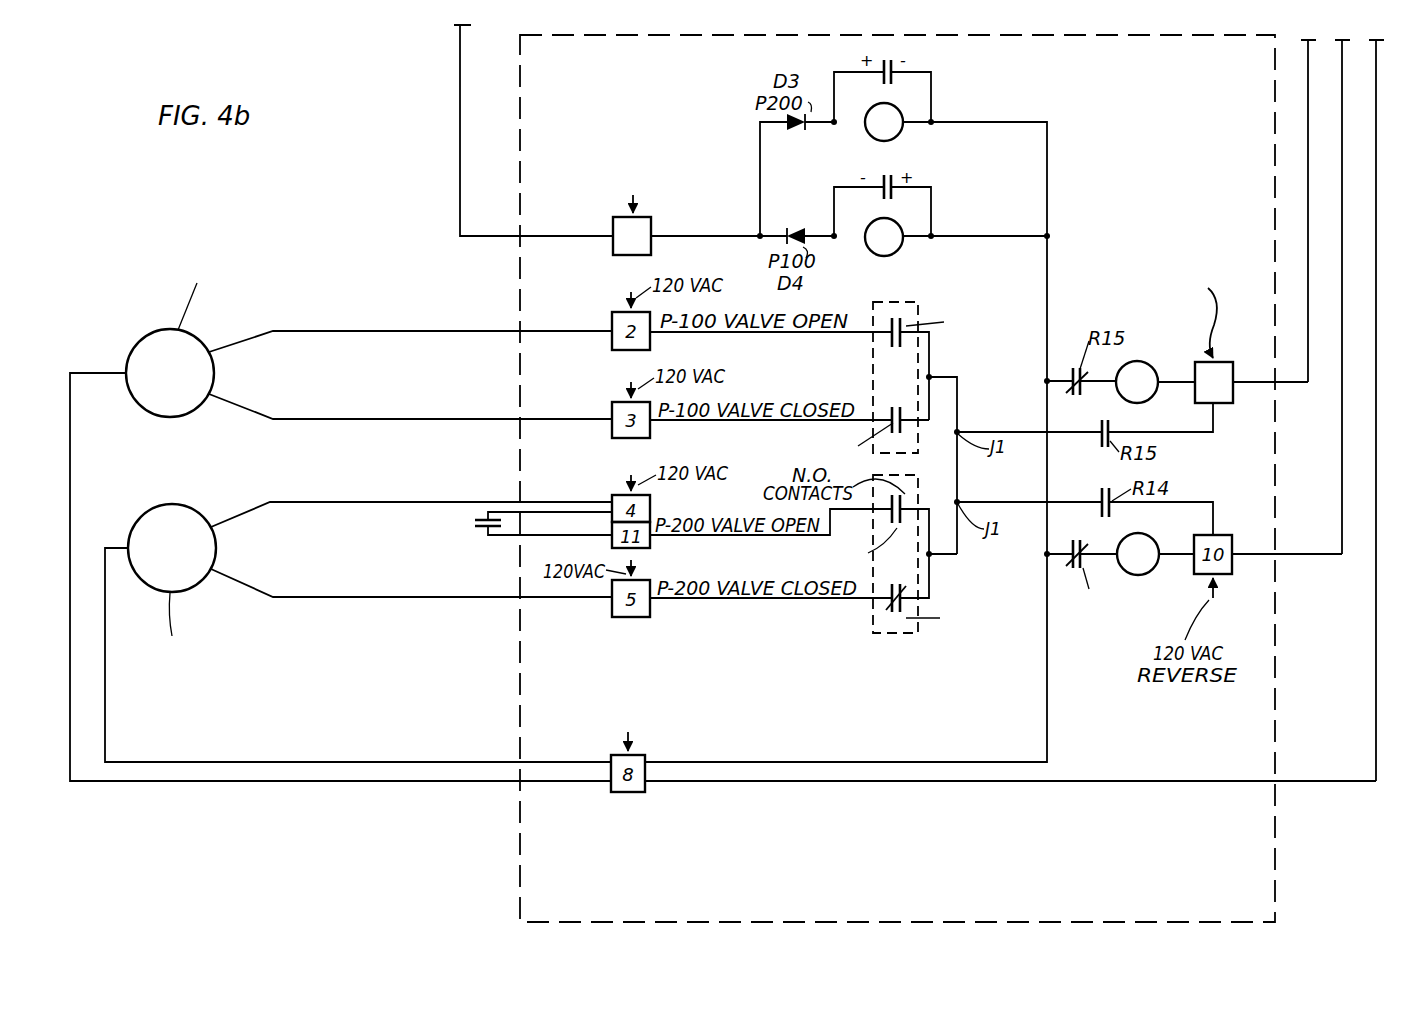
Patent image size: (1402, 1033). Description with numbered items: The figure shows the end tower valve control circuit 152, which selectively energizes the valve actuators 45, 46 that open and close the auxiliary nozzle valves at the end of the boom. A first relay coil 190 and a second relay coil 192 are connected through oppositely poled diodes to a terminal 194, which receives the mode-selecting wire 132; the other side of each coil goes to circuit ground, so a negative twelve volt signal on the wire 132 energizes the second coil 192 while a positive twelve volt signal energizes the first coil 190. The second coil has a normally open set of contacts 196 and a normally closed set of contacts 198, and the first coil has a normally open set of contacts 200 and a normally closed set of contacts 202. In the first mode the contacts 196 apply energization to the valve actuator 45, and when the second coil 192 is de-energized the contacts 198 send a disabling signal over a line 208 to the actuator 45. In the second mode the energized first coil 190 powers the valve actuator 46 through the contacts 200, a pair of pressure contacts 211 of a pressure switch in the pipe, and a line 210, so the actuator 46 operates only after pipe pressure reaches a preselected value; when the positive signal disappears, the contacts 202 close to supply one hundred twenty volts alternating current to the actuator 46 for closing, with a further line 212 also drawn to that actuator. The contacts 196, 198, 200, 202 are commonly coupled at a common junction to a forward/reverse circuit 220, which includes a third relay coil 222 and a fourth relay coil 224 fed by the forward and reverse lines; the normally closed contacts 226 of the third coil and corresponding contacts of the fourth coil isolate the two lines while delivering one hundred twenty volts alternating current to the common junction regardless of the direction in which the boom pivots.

The valve actuator 45 is at (209, 346).
The valve actuator 46 is at (199, 514).
The P1/P2 wire 132 is at (487, 237).
The end tower valve control circuit 152 is at (694, 37).
The R10 coil 190 is at (900, 112).
The R11 coil 192 is at (900, 250).
The terminal 194 is at (652, 229).
The normally open R11 contacts 196 is at (896, 318).
The normally closed R11 contacts 198 is at (920, 433).
The normally open R10 contacts 200 is at (487, 330).
The normally closed R10 contacts 202 is at (912, 606).
The line 208 is at (487, 418).
The line 210 is at (433, 502).
The pressure contacts 211 is at (475, 523).
The conductor to terminal 5 212 is at (489, 597).
The FOR/REV circuit 220 is at (1218, 322).
The R14 coil 222 is at (1151, 399).
The R15 coil 224 is at (1159, 540).
The normally closed R14 contacts 226 is at (1074, 536).